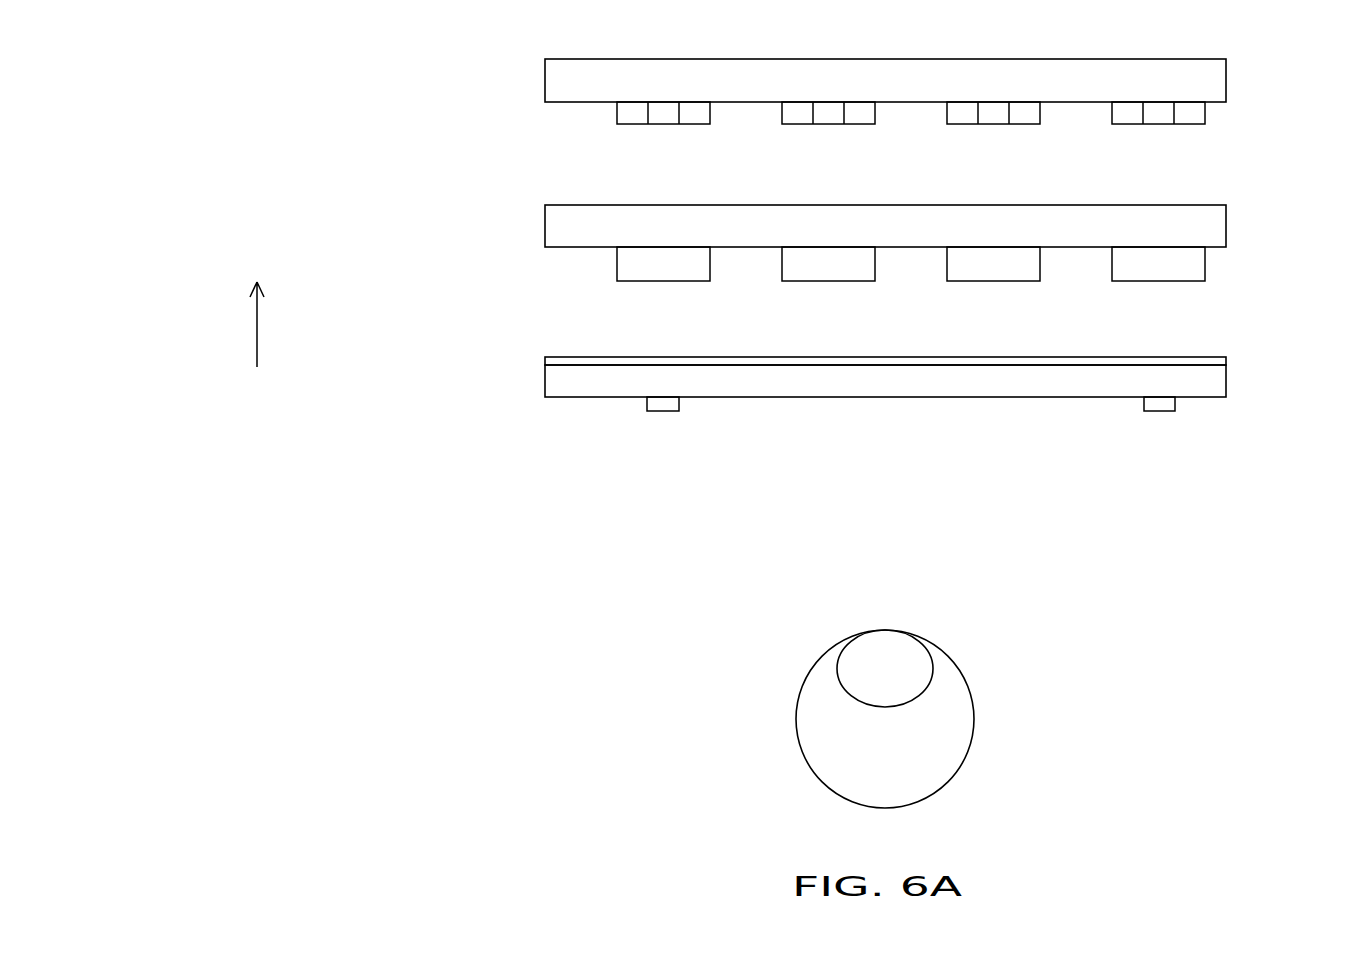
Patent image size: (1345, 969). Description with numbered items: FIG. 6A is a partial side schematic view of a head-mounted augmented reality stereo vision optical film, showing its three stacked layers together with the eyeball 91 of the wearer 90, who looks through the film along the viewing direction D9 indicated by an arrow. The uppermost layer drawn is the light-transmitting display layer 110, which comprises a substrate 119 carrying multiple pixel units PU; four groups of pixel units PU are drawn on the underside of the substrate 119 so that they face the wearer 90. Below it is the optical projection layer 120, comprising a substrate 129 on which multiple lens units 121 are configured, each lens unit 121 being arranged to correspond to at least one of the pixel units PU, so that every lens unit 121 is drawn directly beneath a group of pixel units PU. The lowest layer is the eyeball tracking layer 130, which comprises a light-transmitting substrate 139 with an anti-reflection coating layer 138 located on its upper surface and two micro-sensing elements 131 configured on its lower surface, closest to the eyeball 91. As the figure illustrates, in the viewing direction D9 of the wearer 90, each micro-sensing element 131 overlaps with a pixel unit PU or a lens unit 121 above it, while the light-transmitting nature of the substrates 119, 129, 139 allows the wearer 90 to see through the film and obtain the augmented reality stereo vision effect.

The light-transmitting display layer 110 is at (508, 68).
The substrate 119 is at (1206, 82).
The pixel unit PU is at (700, 113).
The optical projection layer 120 is at (508, 244).
The substrate 129 is at (1206, 228).
The lens unit 121 is at (665, 265).
The eyeball tracking layer 130 is at (508, 370).
The anti-reflection coating layer 138 is at (1220, 361).
The substrate 139 is at (1206, 384).
The micro-sensing element 131 is at (663, 405).
The viewing direction D9 is at (257, 333).
The eyeball 91 is at (974, 716).
The wearer 90 is at (963, 719).